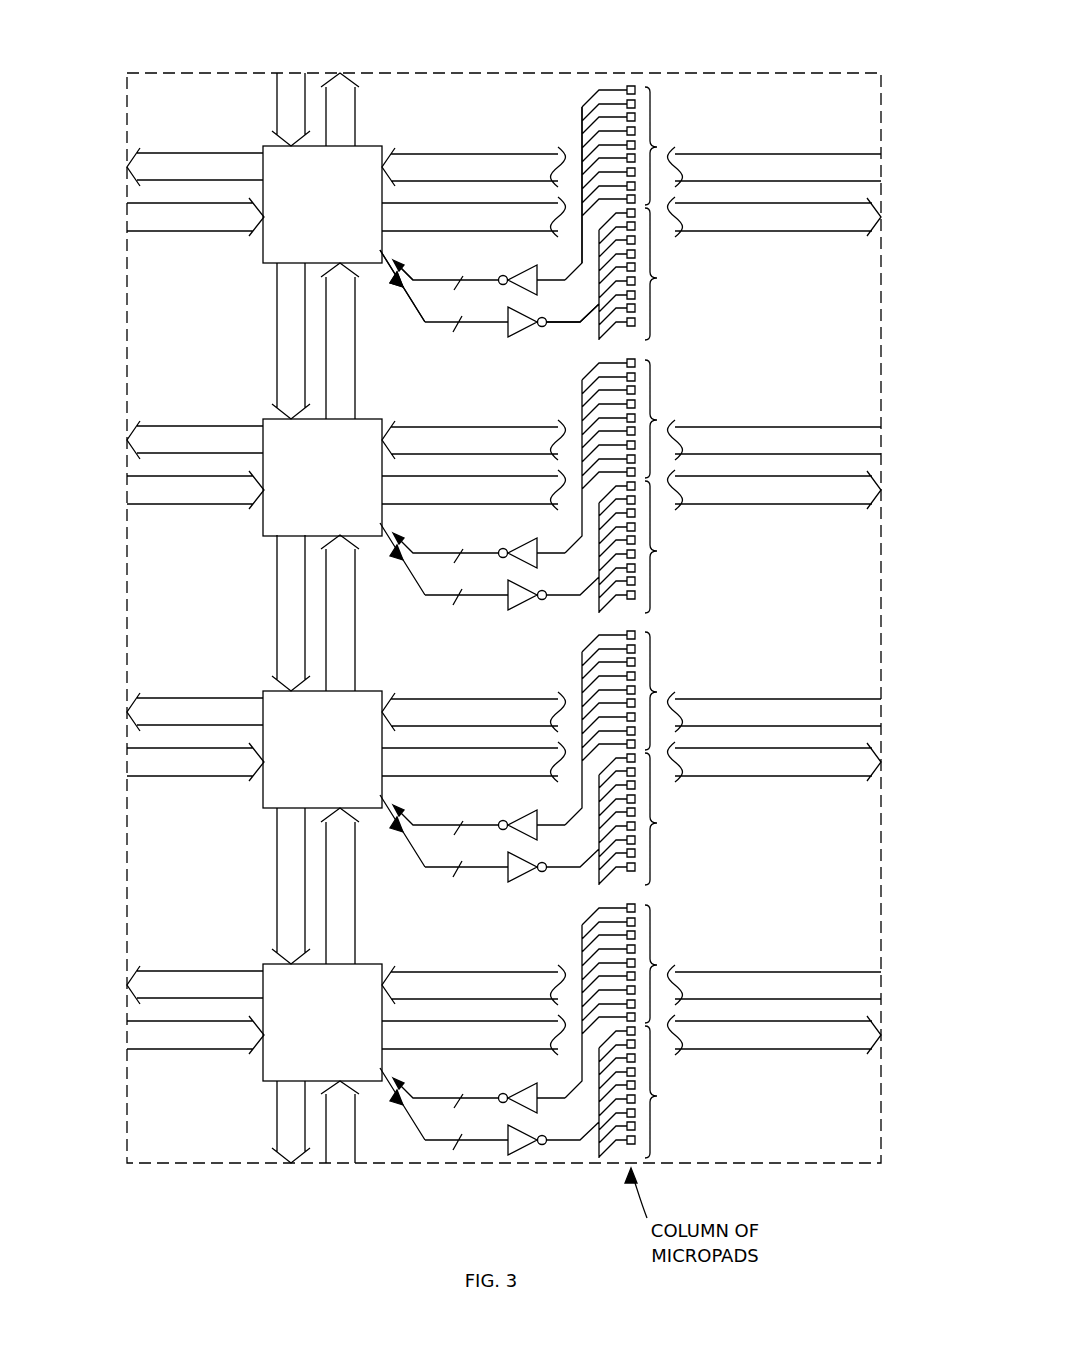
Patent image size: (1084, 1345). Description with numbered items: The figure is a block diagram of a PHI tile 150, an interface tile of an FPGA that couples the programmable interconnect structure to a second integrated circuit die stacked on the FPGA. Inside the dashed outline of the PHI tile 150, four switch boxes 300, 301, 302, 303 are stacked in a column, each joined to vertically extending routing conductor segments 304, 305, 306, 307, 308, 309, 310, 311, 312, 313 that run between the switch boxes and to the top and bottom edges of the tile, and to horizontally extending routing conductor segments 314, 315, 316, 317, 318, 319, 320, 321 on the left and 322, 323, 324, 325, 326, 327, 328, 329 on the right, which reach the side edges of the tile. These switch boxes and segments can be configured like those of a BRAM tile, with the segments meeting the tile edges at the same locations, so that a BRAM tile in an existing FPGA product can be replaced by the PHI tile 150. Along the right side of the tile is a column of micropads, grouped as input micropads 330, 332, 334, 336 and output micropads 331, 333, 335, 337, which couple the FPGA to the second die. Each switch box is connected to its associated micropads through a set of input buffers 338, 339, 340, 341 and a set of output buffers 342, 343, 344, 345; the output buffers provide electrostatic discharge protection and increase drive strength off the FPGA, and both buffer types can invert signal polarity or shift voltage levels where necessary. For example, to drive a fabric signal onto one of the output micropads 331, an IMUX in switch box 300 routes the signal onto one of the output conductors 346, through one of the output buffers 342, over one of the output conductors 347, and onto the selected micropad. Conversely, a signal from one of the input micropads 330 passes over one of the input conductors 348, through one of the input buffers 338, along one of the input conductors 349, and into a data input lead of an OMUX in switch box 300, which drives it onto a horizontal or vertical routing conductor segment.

The PHI tile 150 is at (725, 72).
The switch box 300 is at (306, 227).
The switch box 301 is at (306, 500).
The switch box 302 is at (306, 772).
The switch box 303 is at (306, 1045).
The vertically extending routing conductor segment 304 is at (277, 104).
The vertically extending routing conductor segment 305 is at (355, 100).
The vertically extending routing conductor segment 306 is at (277, 377).
The vertically extending routing conductor segment 307 is at (355, 373).
The vertically extending routing conductor segment 308 is at (277, 649).
The vertically extending routing conductor segment 309 is at (355, 645).
The vertically extending routing conductor segment 310 is at (277, 922).
The vertically extending routing conductor segment 311 is at (355, 918).
The vertically extending routing conductor segment 312 is at (277, 1146).
The vertically extending routing conductor segment 313 is at (355, 1145).
The horizontally extending routing conductor segment 314 is at (209, 153).
The horizontally extending routing conductor segment 315 is at (199, 232).
The horizontally extending routing conductor segment 316 is at (209, 426).
The horizontally extending routing conductor segment 317 is at (199, 505).
The horizontally extending routing conductor segment 318 is at (209, 698).
The horizontally extending routing conductor segment 319 is at (199, 777).
The horizontally extending routing conductor segment 320 is at (209, 971).
The horizontally extending routing conductor segment 321 is at (199, 1050).
The horizontally extending routing conductor segment 322 is at (443, 154).
The horizontally extending routing conductor segment 323 is at (426, 232).
The horizontally extending routing conductor segment 324 is at (443, 427).
The horizontally extending routing conductor segment 325 is at (426, 505).
The horizontally extending routing conductor segment 326 is at (443, 699).
The horizontally extending routing conductor segment 327 is at (426, 777).
The horizontally extending routing conductor segment 328 is at (443, 972).
The horizontally extending routing conductor segment 329 is at (426, 1050).
The input micropads 330 is at (657, 147).
The output micropads 331 is at (657, 278).
The input micropads 332 is at (657, 420).
The output micropads 333 is at (657, 551).
The input micropads 334 is at (657, 692).
The output micropads 335 is at (657, 823).
The input micropads 336 is at (657, 965).
The output micropads 337 is at (657, 1096).
The input buffers 338 is at (523, 271).
The input buffers 339 is at (523, 544).
The input buffers 340 is at (523, 816).
The input buffers 341 is at (523, 1089).
The output buffers 342 is at (508, 313).
The output buffers 343 is at (508, 586).
The output buffers 344 is at (508, 858).
The output buffers 345 is at (508, 1131).
The output conductors 346 is at (405, 296).
The output conductors 347 is at (576, 323).
The input conductors 348 is at (581, 249).
The input conductors 349 is at (437, 282).